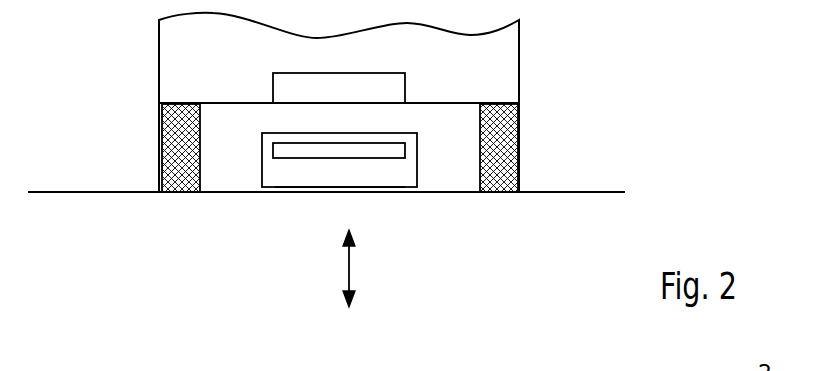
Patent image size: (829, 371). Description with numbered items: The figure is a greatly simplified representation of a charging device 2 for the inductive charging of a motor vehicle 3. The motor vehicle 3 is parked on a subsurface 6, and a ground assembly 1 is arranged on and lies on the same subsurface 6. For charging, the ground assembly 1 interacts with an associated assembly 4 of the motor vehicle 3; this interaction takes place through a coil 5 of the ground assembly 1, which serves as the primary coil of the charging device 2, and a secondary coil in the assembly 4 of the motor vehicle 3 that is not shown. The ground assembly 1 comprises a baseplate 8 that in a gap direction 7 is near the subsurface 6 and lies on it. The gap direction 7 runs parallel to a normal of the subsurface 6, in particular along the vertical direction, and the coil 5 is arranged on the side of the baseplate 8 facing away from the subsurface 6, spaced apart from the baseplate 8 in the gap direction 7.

The ground assembly 1 is at (420, 165).
The charging device 2 is at (449, 132).
The motor vehicle 3 is at (522, 53).
The assembly of the motor vehicle 4 is at (283, 85).
The coil 5 is at (273, 150).
The subsurface 6 is at (82, 191).
The gap direction 7 is at (350, 266).
The baseplate 8 is at (291, 192).